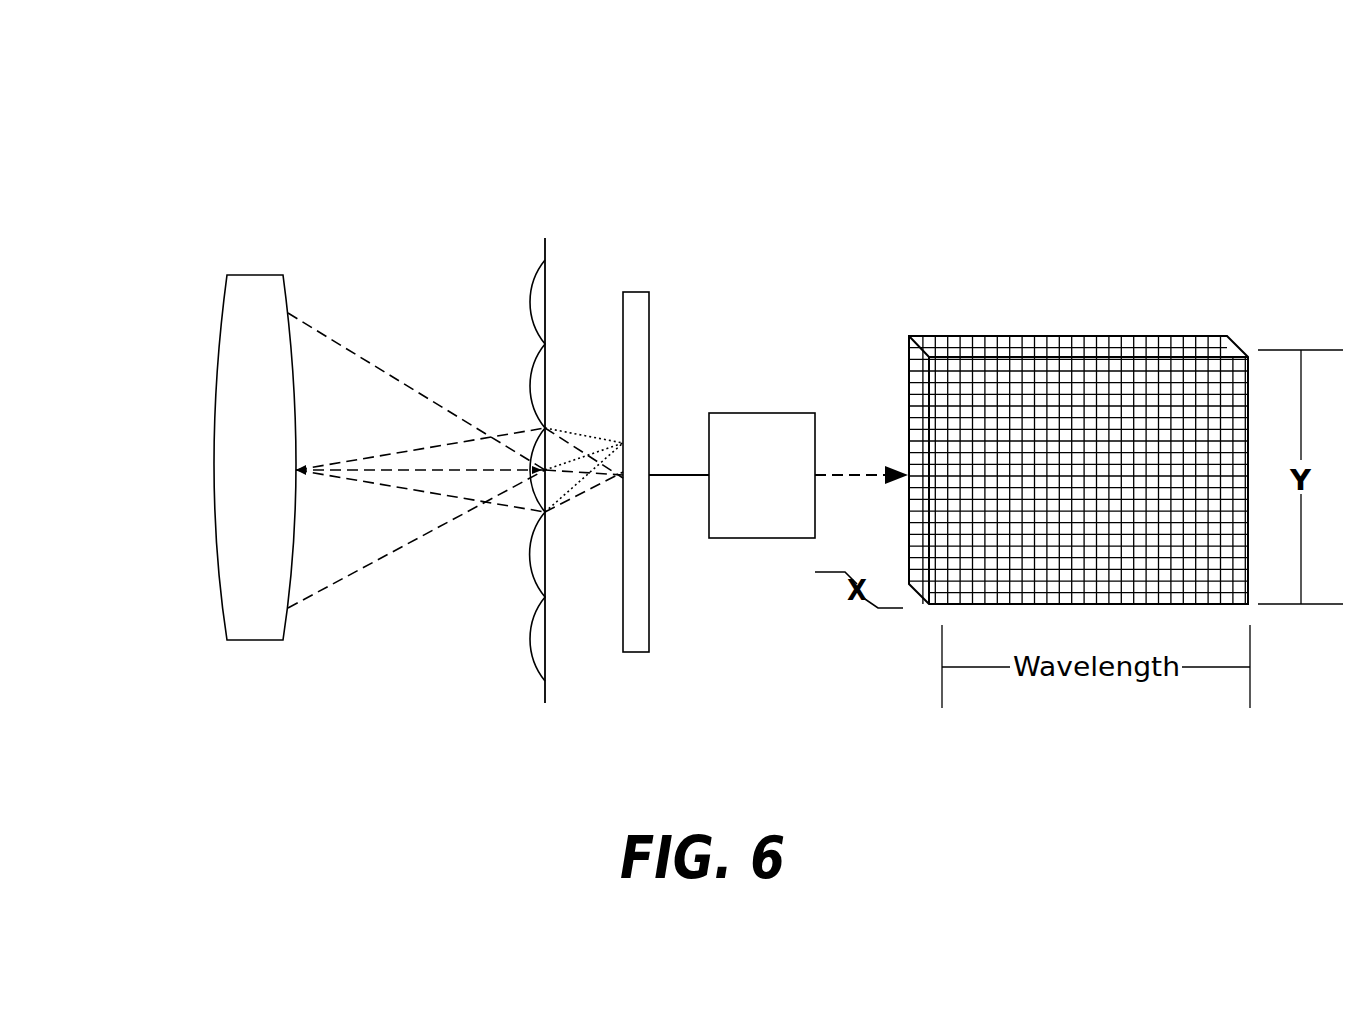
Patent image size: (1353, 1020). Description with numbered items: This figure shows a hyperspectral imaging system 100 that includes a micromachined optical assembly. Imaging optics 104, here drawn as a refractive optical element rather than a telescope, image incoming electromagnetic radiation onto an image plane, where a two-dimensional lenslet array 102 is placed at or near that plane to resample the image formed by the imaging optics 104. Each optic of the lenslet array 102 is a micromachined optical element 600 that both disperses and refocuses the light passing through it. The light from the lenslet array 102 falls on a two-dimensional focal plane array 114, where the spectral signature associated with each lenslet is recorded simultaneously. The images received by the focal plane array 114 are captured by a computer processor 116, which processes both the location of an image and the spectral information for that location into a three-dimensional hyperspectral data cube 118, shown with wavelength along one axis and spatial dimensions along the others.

The hyperspectral imaging system 100 is at (408, 214).
The lenslet array 102 is at (544, 418).
The imaging optics 104 is at (230, 398).
The focal plane array 114 is at (651, 380).
The computer processor 116 is at (745, 413).
The hyperspectral data cube 118 is at (1186, 349).
The micromachined optical element 600 is at (531, 641).